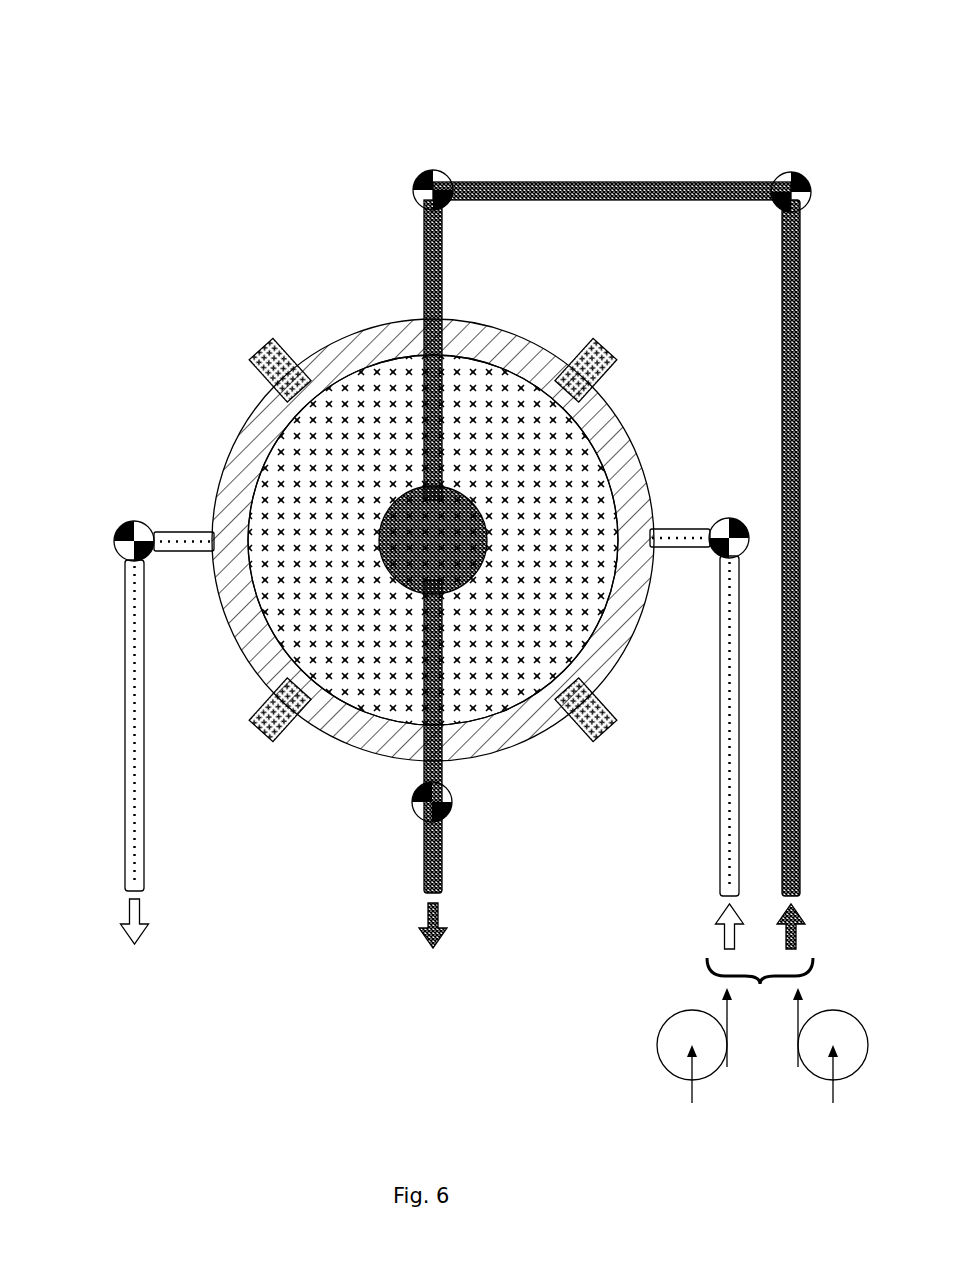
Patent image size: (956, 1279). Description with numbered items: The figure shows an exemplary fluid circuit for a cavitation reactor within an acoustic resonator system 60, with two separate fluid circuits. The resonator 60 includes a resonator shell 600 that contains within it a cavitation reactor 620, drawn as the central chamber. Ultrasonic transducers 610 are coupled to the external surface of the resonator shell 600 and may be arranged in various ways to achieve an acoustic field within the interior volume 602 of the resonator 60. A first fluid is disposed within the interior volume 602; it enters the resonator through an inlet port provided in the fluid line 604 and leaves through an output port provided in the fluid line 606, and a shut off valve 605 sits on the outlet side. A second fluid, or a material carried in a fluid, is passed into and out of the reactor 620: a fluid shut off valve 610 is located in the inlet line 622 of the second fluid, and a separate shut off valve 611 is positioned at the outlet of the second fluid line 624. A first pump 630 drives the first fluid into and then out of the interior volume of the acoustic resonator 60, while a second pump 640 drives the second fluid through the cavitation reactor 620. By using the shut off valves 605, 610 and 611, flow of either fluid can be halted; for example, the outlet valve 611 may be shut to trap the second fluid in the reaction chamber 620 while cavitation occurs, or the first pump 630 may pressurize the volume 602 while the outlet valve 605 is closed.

The acoustic resonator system 60 is at (150, 103).
The resonator shell 600 is at (365, 330).
The interior volume 602 is at (298, 455).
The fluid line 604 is at (718, 855).
The outlet valve 605 is at (116, 535).
The fluid line 606 is at (124, 725).
The ultrasonic transducers 610 is at (433, 170).
The shut off valve 611 is at (452, 818).
The cavitation reactor 620 is at (383, 540).
The inlet line 622 is at (443, 300).
The second fluid line 624 is at (424, 880).
The first pump 630 is at (657, 1050).
The second pump 640 is at (805, 1073).